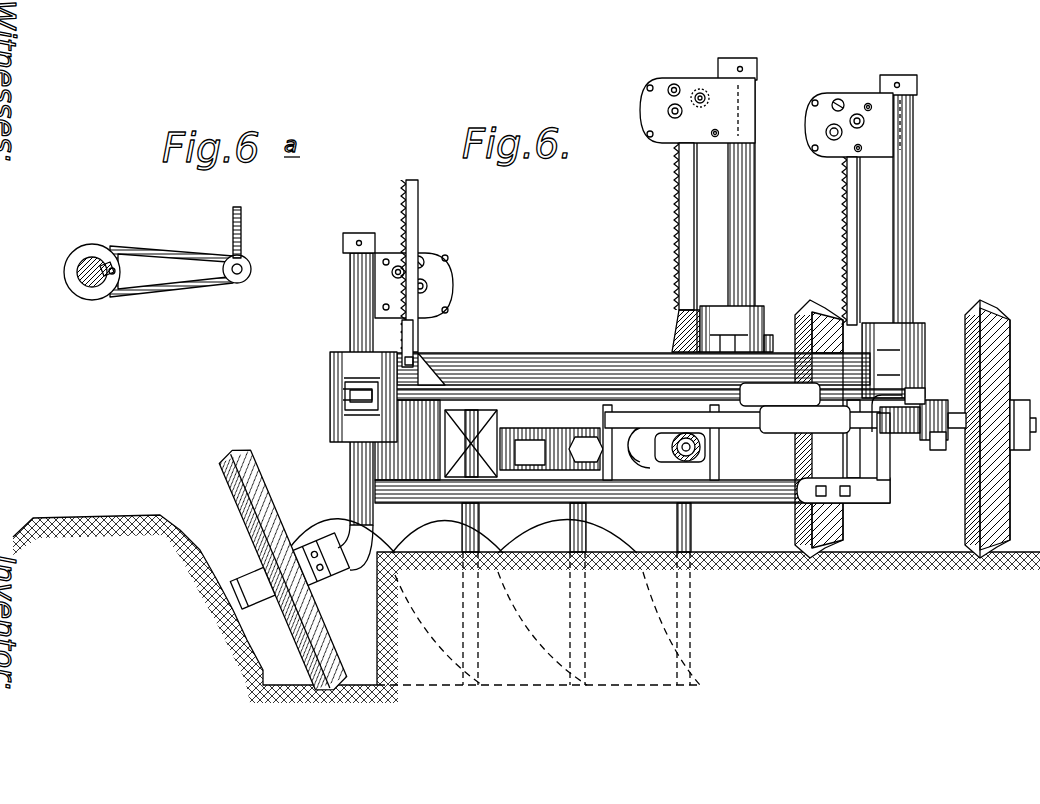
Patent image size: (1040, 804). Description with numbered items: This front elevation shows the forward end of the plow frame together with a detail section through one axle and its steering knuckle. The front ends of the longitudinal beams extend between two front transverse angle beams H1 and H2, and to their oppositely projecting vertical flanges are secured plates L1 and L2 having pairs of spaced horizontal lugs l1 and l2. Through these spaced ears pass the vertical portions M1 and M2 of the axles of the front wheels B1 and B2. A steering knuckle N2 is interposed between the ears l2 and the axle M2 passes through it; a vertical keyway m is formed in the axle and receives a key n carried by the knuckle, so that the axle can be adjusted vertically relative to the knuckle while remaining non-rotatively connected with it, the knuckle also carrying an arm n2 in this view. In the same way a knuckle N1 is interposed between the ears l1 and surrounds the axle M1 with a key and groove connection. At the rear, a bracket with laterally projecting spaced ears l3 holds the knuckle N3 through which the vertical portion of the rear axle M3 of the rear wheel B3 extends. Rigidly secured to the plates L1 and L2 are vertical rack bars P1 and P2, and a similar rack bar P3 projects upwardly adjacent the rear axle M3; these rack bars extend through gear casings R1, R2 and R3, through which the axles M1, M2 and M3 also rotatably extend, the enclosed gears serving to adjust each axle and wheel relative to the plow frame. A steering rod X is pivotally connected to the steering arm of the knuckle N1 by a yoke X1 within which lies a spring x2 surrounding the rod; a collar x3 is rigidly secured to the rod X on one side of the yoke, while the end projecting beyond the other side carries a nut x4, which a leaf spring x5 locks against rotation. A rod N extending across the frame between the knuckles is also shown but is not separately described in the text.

In FIG. 6, the gear casing R3 is at (742, 100).
In FIG. 6, the gear casing R1 is at (913, 122).
In FIG. 6, the gear casing R2 is at (345, 285).
In FIG. 6, the rear axle M3 is at (758, 202).
In FIG. 6, the front axle M1 is at (910, 262).
In FIG. 6, the front axle M2 is at (350, 478).
In FIG. 6A, the front axle M2 is at (78, 270).
In FIG. 6, the rack bar P3 is at (675, 263).
In FIG. 6, the rack bar P1 is at (850, 270).
In FIG. 6, the rack bar P2 is at (414, 342).
In FIG. 6, the rear wheel B3 is at (817, 297).
In FIG. 6, the front wheel B1 is at (987, 307).
In FIG. 6, the front wheel B2 is at (225, 478).
In FIG. 6, the spaced ears l3 is at (753, 306).
In FIG. 6, the spaced horizontal lugs l1 is at (913, 320).
In FIG. 6, the spaced horizontal lugs l2 is at (330, 364).
In FIG. 6, the knuckle N3 is at (763, 331).
In FIG. 6, the knuckle N1 is at (845, 332).
In FIG. 6, the main shaft N is at (550, 388).
In FIG. 6A, the main shaft N is at (241, 227).
In FIG. 6, the steering knuckle N2 is at (342, 398).
In FIG. 6A, the steering knuckle N2 is at (80, 294).
In FIG. 6, the key n is at (772, 384).
In FIG. 6A, the key n is at (113, 276).
In FIG. 6A, the lever arm n2 is at (190, 287).
In FIG. 6A, the keyway m is at (102, 290).
In FIG. 6, the leaf spring x5 is at (918, 392).
In FIG. 6, the yoke X1 is at (928, 403).
In FIG. 6, the collar x3 is at (867, 430).
In FIG. 6, the spring x2 is at (907, 436).
In FIG. 6, the nut x4 is at (948, 452).
In FIG. 6, the steering rod X is at (705, 454).
In FIG. 6, the plate L1 is at (843, 458).
In FIG. 6, the plate L2 is at (440, 363).
In FIG. 6, the front transverse angle beam H1 is at (607, 357).
In FIG. 6, the front transverse angle beam H2 is at (758, 497).